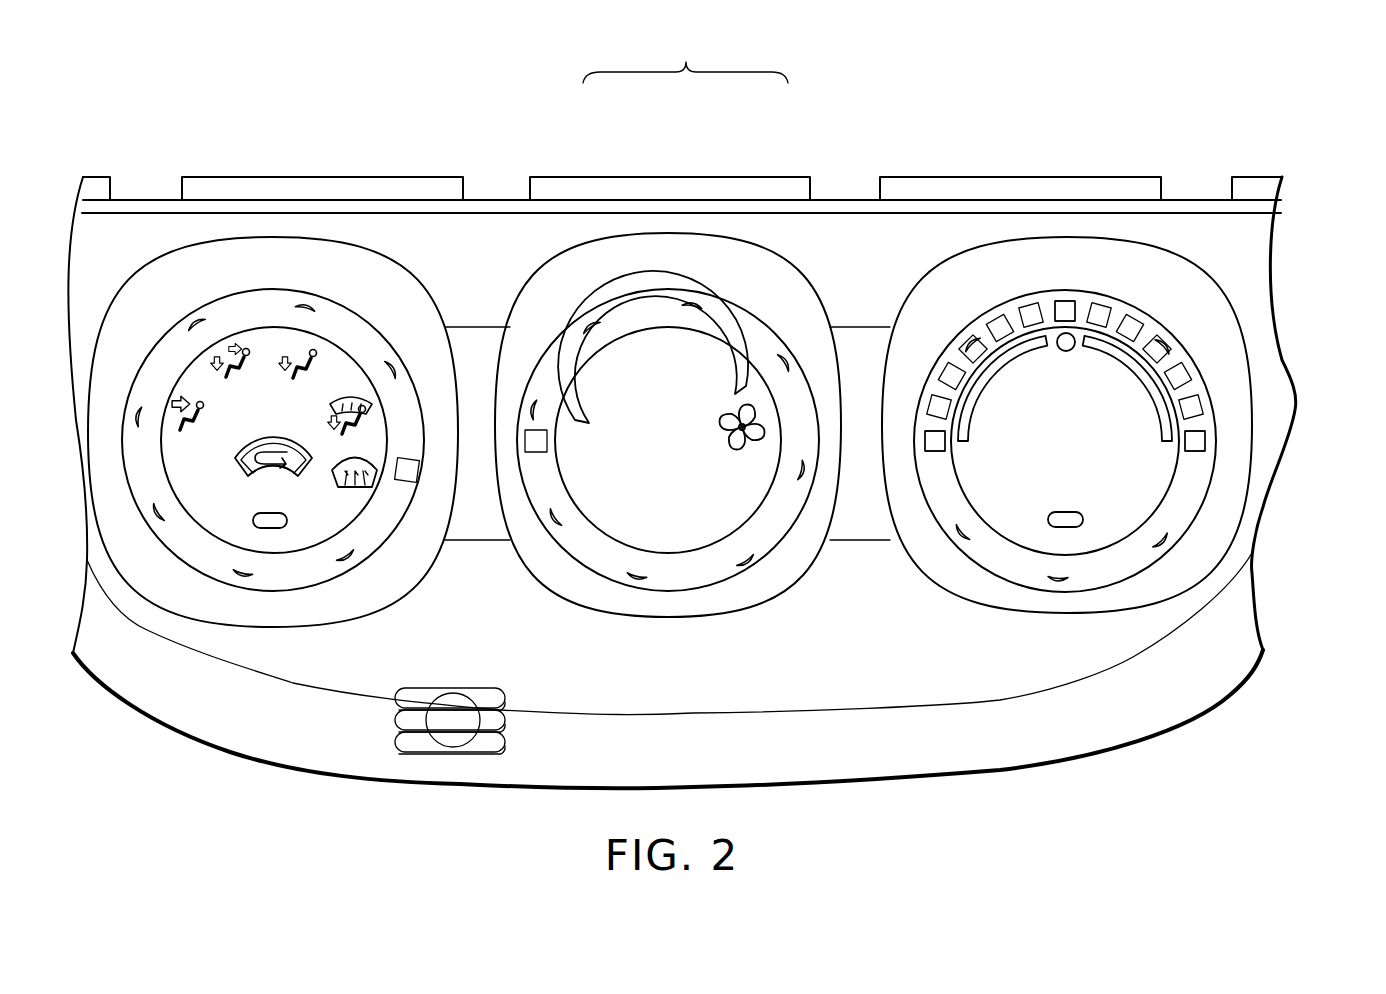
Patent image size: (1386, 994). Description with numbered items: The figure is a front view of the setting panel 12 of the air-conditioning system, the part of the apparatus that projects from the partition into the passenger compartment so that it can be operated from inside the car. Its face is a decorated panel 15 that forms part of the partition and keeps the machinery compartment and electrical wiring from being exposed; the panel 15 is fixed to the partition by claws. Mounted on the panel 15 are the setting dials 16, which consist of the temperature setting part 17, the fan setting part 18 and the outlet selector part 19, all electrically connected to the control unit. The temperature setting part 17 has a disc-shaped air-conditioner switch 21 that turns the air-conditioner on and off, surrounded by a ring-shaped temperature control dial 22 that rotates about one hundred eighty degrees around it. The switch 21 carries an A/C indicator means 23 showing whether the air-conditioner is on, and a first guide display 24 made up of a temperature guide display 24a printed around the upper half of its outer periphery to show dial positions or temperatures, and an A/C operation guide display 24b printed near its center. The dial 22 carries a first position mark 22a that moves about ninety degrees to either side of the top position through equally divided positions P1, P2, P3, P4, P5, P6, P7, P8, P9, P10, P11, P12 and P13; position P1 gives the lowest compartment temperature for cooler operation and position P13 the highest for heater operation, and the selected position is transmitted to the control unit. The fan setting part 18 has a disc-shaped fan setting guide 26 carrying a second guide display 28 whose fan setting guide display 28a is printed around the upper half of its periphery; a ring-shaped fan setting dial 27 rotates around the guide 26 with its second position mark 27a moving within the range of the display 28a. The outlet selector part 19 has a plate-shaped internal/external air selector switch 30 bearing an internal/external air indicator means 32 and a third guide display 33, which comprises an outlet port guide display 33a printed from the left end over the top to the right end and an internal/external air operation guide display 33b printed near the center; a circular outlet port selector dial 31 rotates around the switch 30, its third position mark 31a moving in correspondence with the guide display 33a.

The setting panel 12 is at (1290, 302).
The decorated panel 15 is at (1187, 222).
The setting dials 16 is at (685, 60).
The temperature setting part 17 is at (988, 250).
The fan setting part 18 is at (670, 253).
The outlet selector part 19 is at (382, 277).
The air-conditioner switch 21 is at (1143, 507).
The temperature control dial 22 is at (1127, 583).
The first position mark 22a is at (1066, 300).
The A/C indicator means 23 is at (1065, 528).
The first guide display 24 is at (1030, 470).
The temperature guide display 24a is at (1066, 352).
The A/C operation guide display 24b is at (1083, 420).
The fan setting guide 26 is at (625, 513).
The fan setting dial 27 is at (733, 577).
The second position mark 27a is at (535, 430).
The second guide display 28 is at (657, 400).
The fan setting guide display 28a is at (725, 357).
The internal/external air selector switch 30 is at (340, 360).
The outlet port selector dial 31 is at (327, 587).
The third position mark 31a is at (412, 458).
The internal/external air indicator means 32 is at (270, 530).
The third guide display 33 is at (205, 473).
The outlet port guide display 33a is at (195, 390).
The internal/external air operation guide display 33b is at (307, 476).
The position P1 is at (923, 441).
The position P2 is at (928, 404).
The position P3 is at (942, 370).
The position P4 is at (965, 341).
The position P5 is at (994, 318).
The position P6 is at (1028, 304).
The position P7 is at (1063, 299).
The position P8 is at (1102, 304).
The position P9 is at (1136, 318).
The position P10 is at (1165, 341).
The position P11 is at (1188, 370).
The position P12 is at (1202, 404).
The position P13 is at (1207, 441).